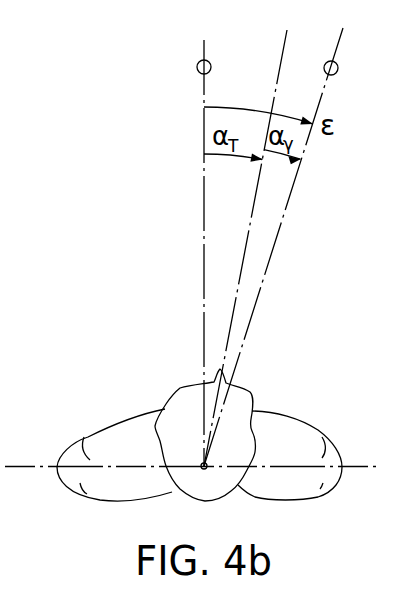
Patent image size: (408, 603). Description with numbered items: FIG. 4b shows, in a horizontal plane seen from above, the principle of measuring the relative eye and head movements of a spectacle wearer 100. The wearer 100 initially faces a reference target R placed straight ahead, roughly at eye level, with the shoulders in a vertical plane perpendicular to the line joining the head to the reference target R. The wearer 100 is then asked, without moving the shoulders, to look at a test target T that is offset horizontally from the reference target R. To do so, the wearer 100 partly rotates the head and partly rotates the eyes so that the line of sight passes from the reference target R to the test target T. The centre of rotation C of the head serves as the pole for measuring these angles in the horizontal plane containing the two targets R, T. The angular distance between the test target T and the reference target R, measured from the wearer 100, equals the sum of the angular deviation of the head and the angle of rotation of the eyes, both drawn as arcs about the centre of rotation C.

The wearer 100 is at (306, 407).
The reference target R is at (198, 66).
The test target T is at (338, 65).
The centre of rotation of the head C is at (201, 463).